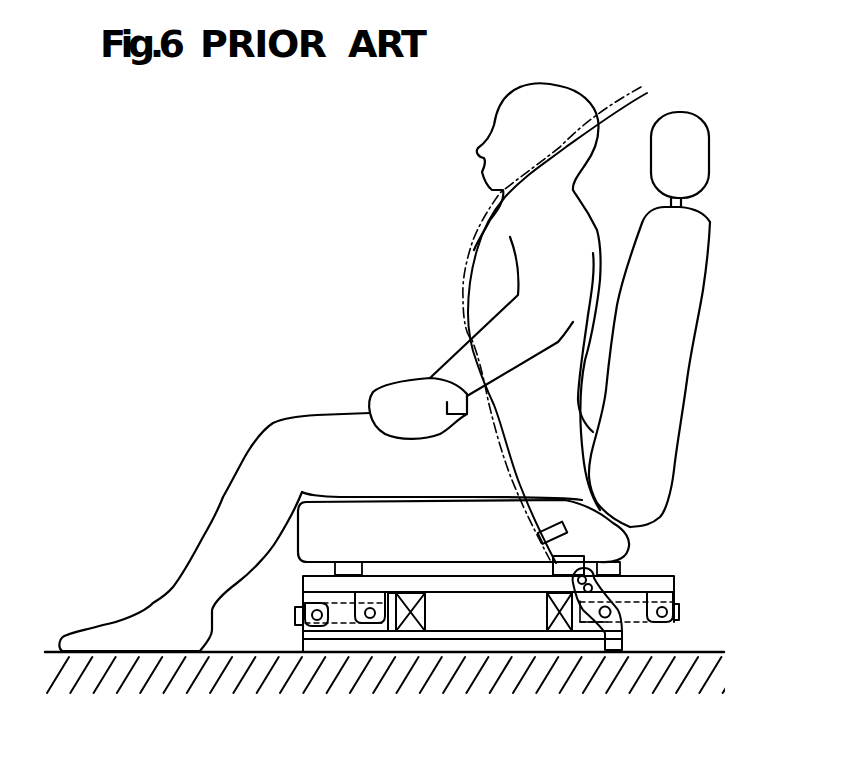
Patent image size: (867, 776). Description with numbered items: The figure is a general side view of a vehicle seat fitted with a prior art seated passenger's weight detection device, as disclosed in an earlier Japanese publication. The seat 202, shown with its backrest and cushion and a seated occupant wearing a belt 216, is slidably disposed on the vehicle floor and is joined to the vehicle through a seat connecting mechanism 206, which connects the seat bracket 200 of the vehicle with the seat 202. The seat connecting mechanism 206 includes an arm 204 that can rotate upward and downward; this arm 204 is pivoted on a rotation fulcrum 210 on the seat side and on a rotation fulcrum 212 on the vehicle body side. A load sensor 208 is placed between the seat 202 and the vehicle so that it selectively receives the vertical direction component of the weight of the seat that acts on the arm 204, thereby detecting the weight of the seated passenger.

The seat bracket 200 is at (320, 640).
The seat 202 is at (680, 440).
The arm 204 is at (343, 623).
The seat connecting mechanism 206 is at (291, 614).
The load sensor 208 is at (545, 612).
The rotation fulcrum of seat side 210 is at (385, 625).
The rotation fulcrum of vehicle body side 212 is at (303, 604).
The seat belt 216 is at (472, 174).